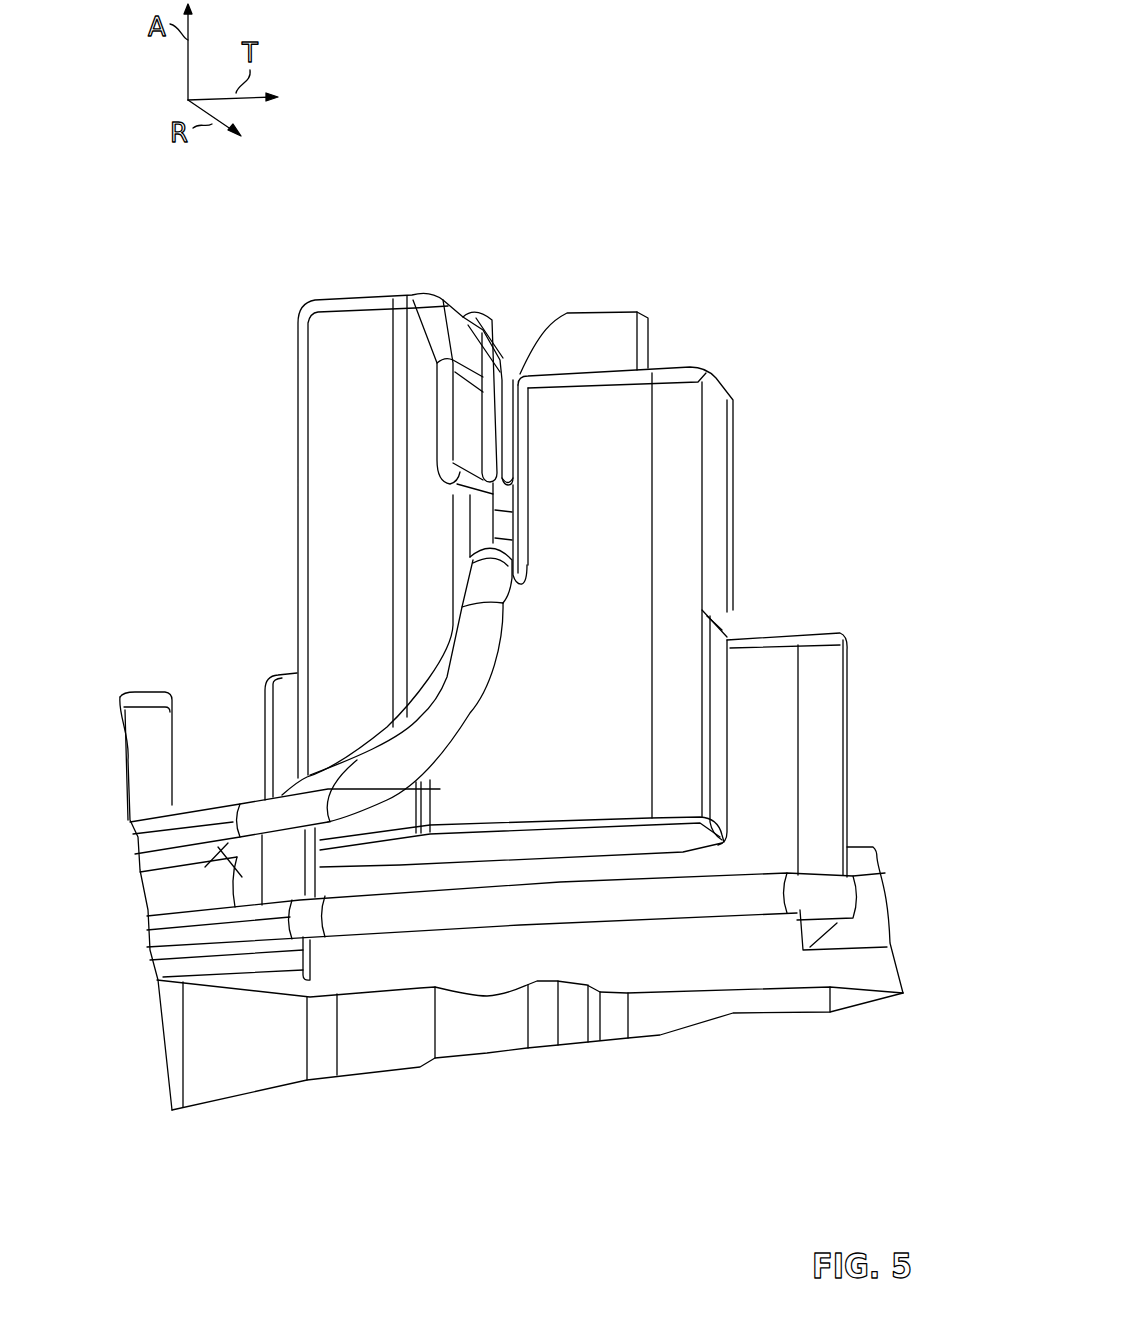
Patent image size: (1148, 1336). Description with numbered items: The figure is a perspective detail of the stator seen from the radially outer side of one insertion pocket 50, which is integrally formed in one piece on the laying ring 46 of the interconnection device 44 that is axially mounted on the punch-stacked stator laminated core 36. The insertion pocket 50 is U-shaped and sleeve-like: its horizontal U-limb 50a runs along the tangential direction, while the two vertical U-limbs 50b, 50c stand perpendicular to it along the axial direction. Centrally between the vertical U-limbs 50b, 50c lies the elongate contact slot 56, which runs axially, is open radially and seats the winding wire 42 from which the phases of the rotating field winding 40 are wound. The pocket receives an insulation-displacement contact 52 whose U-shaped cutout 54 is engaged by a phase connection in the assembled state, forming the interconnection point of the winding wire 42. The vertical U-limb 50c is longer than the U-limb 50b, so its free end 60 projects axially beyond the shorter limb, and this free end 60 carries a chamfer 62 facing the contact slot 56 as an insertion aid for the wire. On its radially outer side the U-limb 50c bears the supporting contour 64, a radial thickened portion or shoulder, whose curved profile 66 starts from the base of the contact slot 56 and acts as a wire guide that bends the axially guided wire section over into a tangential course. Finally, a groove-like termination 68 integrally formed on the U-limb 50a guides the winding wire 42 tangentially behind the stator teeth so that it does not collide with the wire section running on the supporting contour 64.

The stator laminated core 36 is at (390, 1050).
The rotating field winding 40 is at (200, 830).
The winding wire 42 is at (123, 901).
The interconnection device 44 is at (882, 981).
The laying ring 46 is at (847, 968).
The insertion pocket 50 is at (630, 568).
The horizontal U-limb 50a is at (765, 777).
The vertical U-limb 50b is at (713, 468).
The vertical U-limb 50c is at (322, 447).
The insulation-displacement contact 52 is at (607, 327).
The U-shaped cutout 54 is at (512, 368).
The contact slot 56 is at (587, 374).
The free end 60 is at (372, 307).
The chamfer 62 is at (460, 307).
The supporting contour 64 is at (357, 517).
The curved profile 66 is at (383, 730).
The termination 68 is at (679, 937).